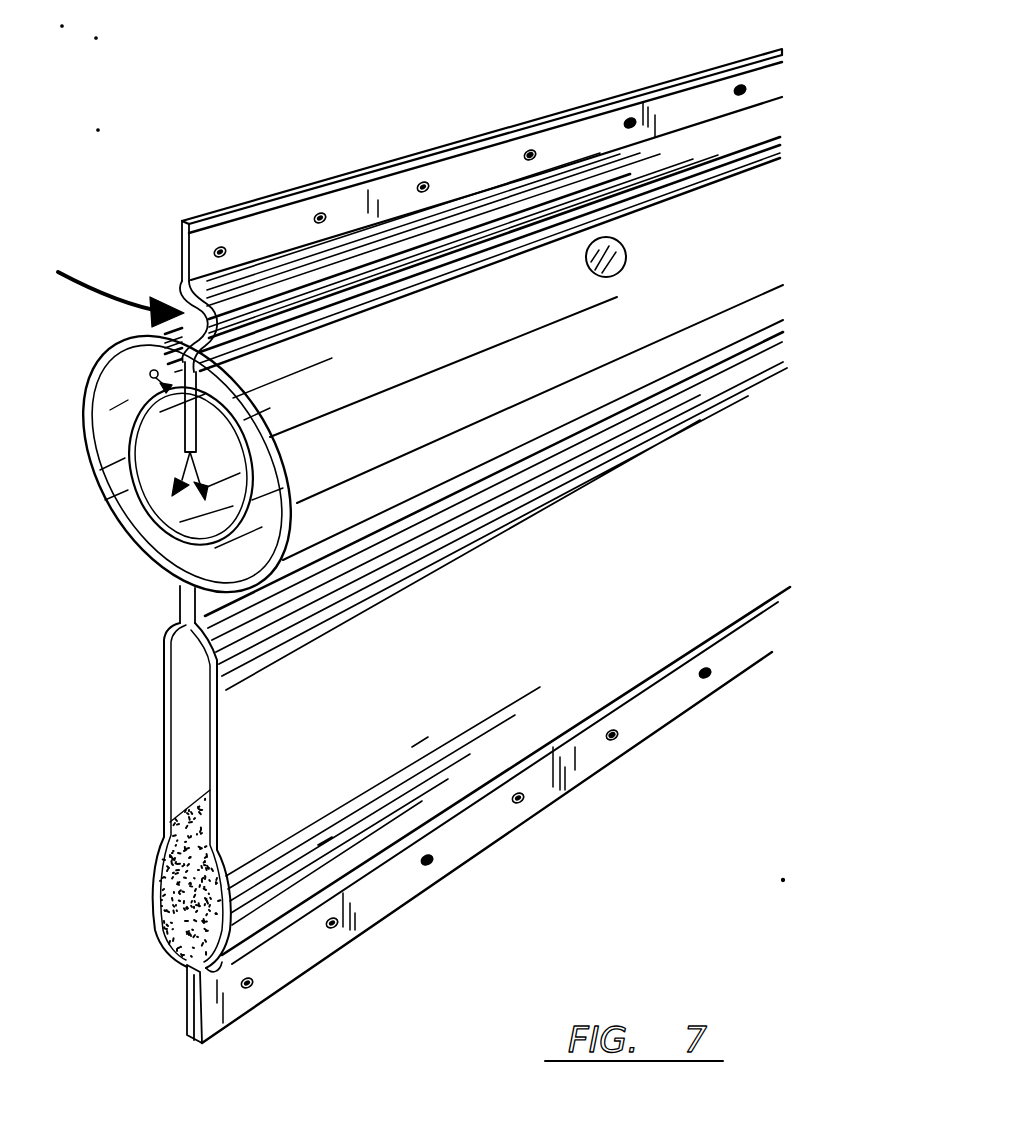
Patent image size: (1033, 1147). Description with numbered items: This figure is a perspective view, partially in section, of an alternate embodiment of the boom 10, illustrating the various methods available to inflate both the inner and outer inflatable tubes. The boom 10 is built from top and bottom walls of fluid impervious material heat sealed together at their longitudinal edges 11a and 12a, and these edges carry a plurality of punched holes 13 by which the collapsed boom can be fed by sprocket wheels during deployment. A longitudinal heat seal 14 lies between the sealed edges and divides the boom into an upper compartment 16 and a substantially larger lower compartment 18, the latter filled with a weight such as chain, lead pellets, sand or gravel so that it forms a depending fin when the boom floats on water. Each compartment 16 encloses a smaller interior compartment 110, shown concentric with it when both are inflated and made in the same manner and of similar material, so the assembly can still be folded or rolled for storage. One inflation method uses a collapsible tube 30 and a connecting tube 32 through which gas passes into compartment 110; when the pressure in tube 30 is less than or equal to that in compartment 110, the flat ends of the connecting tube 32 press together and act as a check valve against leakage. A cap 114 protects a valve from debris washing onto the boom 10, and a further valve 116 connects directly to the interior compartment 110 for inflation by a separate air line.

The boom 10 is at (437, 85).
The longitudinal edge 12a is at (578, 112).
The punched holes 13 is at (325, 212).
The collapsible tube 30 is at (180, 290).
The cap 114 is at (628, 250).
The valve 116 is at (152, 378).
The compartment 16 is at (108, 428).
The connecting tube 32 is at (175, 431).
The smaller interior compartment 110 is at (155, 488).
The longitudinal heat seal 14 is at (180, 605).
The compartment 18 is at (173, 705).
The longitudinal edge 11a is at (334, 958).